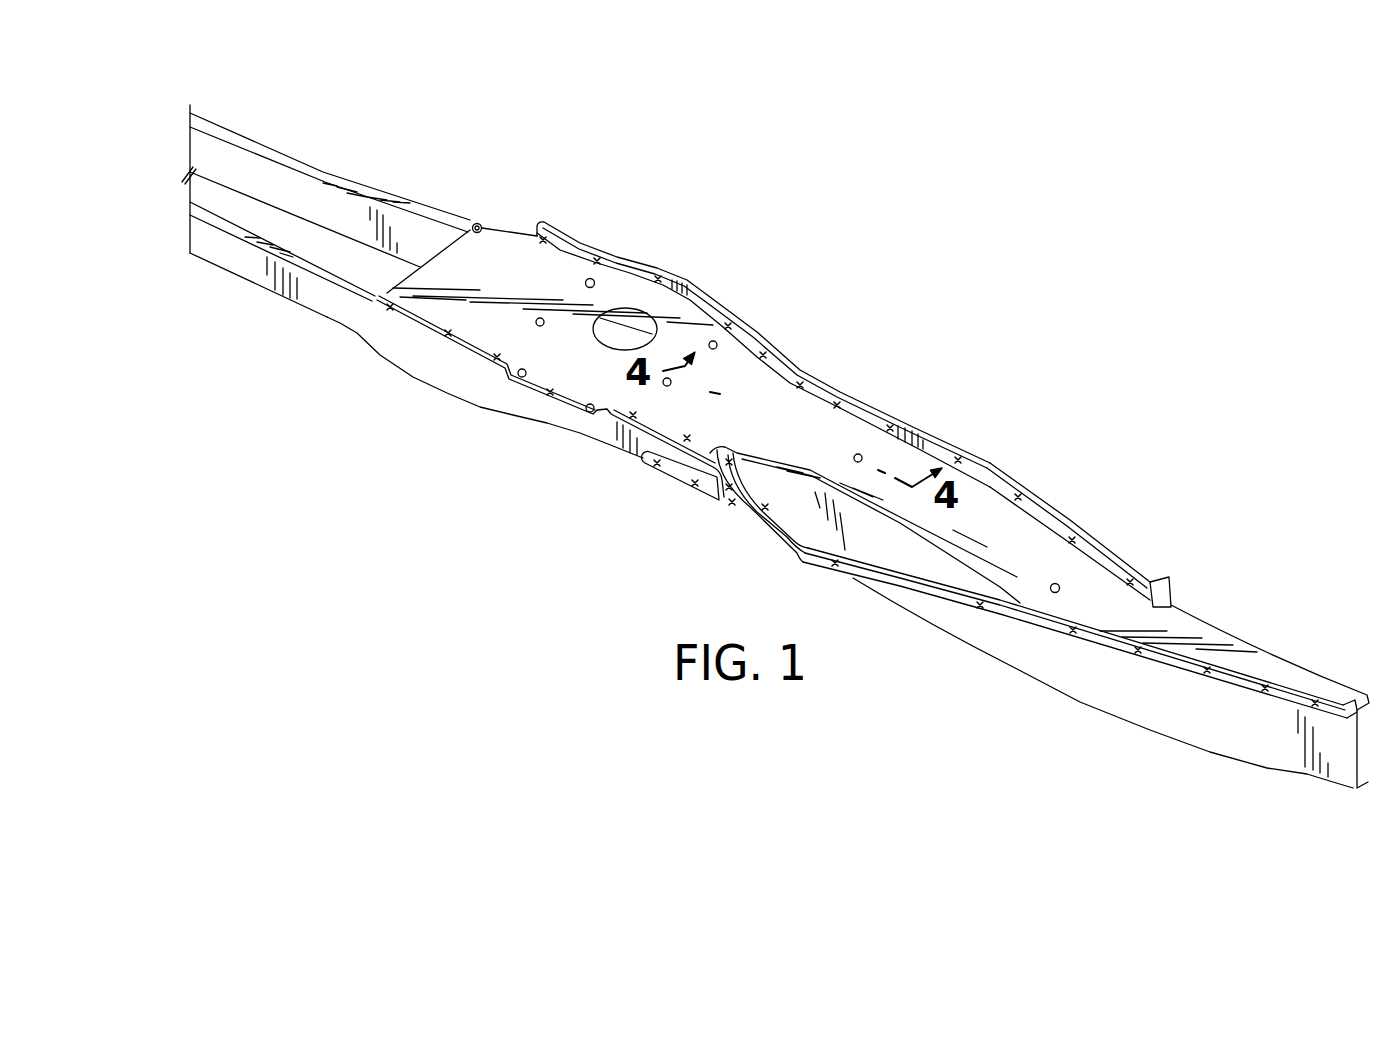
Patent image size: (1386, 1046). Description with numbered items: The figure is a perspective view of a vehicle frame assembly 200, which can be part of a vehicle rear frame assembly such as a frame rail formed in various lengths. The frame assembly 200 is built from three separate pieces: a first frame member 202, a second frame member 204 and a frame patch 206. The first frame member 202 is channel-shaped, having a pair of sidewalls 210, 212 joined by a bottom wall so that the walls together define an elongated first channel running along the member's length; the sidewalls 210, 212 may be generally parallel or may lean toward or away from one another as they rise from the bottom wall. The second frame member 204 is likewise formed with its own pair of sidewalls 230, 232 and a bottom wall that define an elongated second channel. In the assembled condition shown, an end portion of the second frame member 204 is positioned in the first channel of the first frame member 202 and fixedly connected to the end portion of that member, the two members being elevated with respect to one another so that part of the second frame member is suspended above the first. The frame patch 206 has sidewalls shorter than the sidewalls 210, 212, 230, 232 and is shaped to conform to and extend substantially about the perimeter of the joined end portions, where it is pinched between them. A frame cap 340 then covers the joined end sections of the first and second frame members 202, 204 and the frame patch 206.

The vehicle frame assembly 200 is at (970, 345).
The first frame member 202 is at (1007, 665).
The second frame member 204 is at (337, 313).
The frame patch 206 is at (702, 497).
The sidewall 210 is at (1092, 680).
The sidewall 212 is at (1108, 549).
The sidewall 230 is at (510, 402).
The sidewall 232 is at (423, 233).
The frame cap 340 is at (1003, 528).